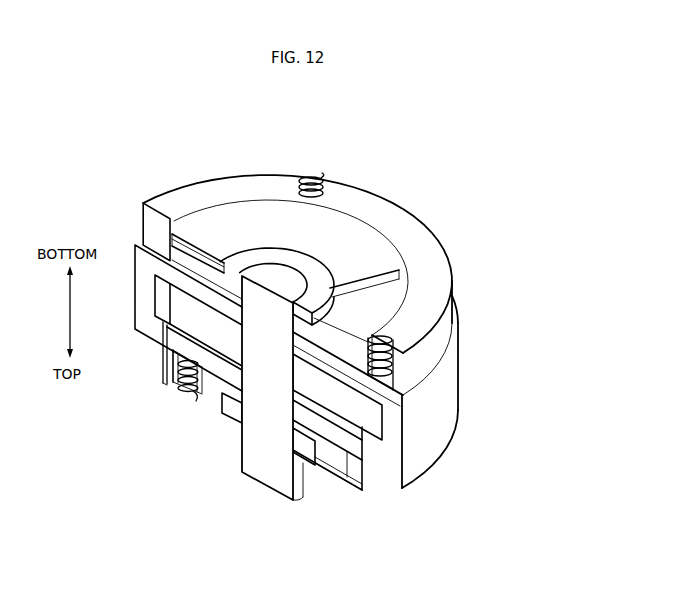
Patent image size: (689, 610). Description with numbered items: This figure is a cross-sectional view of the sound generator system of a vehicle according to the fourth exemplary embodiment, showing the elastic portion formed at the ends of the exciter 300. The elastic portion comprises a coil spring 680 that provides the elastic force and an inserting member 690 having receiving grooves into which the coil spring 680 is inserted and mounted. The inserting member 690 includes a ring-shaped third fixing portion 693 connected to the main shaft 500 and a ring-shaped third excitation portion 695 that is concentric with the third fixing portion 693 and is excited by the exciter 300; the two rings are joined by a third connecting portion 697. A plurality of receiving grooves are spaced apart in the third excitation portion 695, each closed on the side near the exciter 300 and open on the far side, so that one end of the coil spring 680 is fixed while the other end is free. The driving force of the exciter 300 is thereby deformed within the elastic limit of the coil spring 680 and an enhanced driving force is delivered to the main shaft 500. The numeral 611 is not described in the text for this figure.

The exciter 300 is at (471, 366).
The main shaft 500 is at (262, 474).
The elastic member 611 is at (185, 402).
The coil spring 680 is at (309, 180).
The inserting member 690 is at (453, 250).
The third fixing portion 693 is at (274, 246).
The third excitation portion 695 is at (368, 208).
The third connecting portion 697 is at (190, 233).